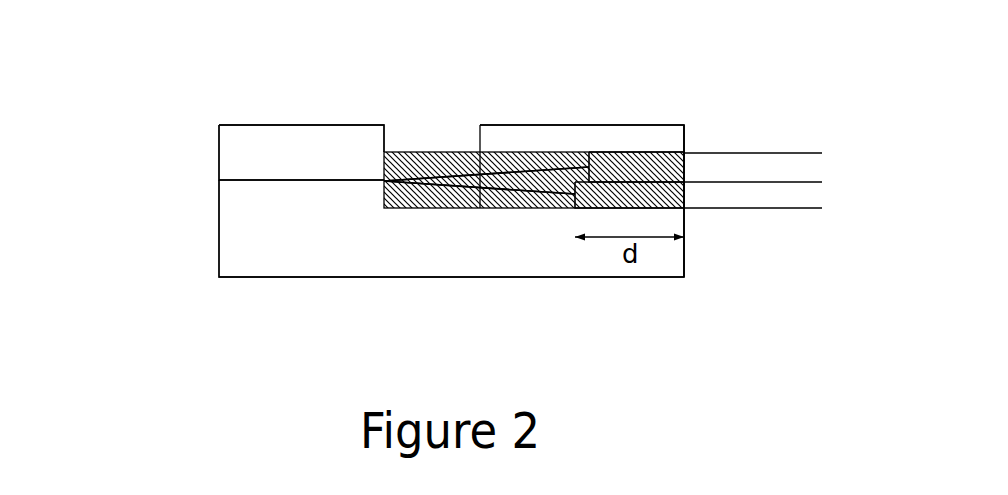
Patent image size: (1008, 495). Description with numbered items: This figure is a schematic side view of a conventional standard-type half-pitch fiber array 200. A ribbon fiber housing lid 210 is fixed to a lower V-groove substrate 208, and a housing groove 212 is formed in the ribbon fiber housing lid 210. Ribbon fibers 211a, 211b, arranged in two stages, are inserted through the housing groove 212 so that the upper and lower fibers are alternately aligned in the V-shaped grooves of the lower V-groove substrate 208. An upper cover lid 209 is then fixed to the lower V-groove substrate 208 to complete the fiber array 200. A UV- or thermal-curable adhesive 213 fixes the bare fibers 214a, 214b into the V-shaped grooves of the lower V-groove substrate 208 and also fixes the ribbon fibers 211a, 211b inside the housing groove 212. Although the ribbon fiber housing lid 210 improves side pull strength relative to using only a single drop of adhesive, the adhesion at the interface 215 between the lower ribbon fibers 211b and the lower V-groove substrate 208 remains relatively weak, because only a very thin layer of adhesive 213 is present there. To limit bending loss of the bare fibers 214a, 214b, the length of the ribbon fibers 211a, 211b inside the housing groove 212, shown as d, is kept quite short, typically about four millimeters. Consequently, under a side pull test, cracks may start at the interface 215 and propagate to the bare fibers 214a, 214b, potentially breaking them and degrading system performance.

The half-pitch fiber array 200 is at (177, 250).
The lower V-groove substrate 208 is at (315, 250).
The upper cover lid 209 is at (302, 152).
The ribbon fiber housing lid 210 is at (575, 140).
The ribbon fiber 211a is at (710, 168).
The ribbon fiber 211b is at (751, 197).
The housing groove 212 is at (547, 170).
The adhesive 213 is at (412, 195).
The bare fiber 214a is at (486, 155).
The bare fiber 214b is at (508, 195).
The interface 215 is at (684, 208).